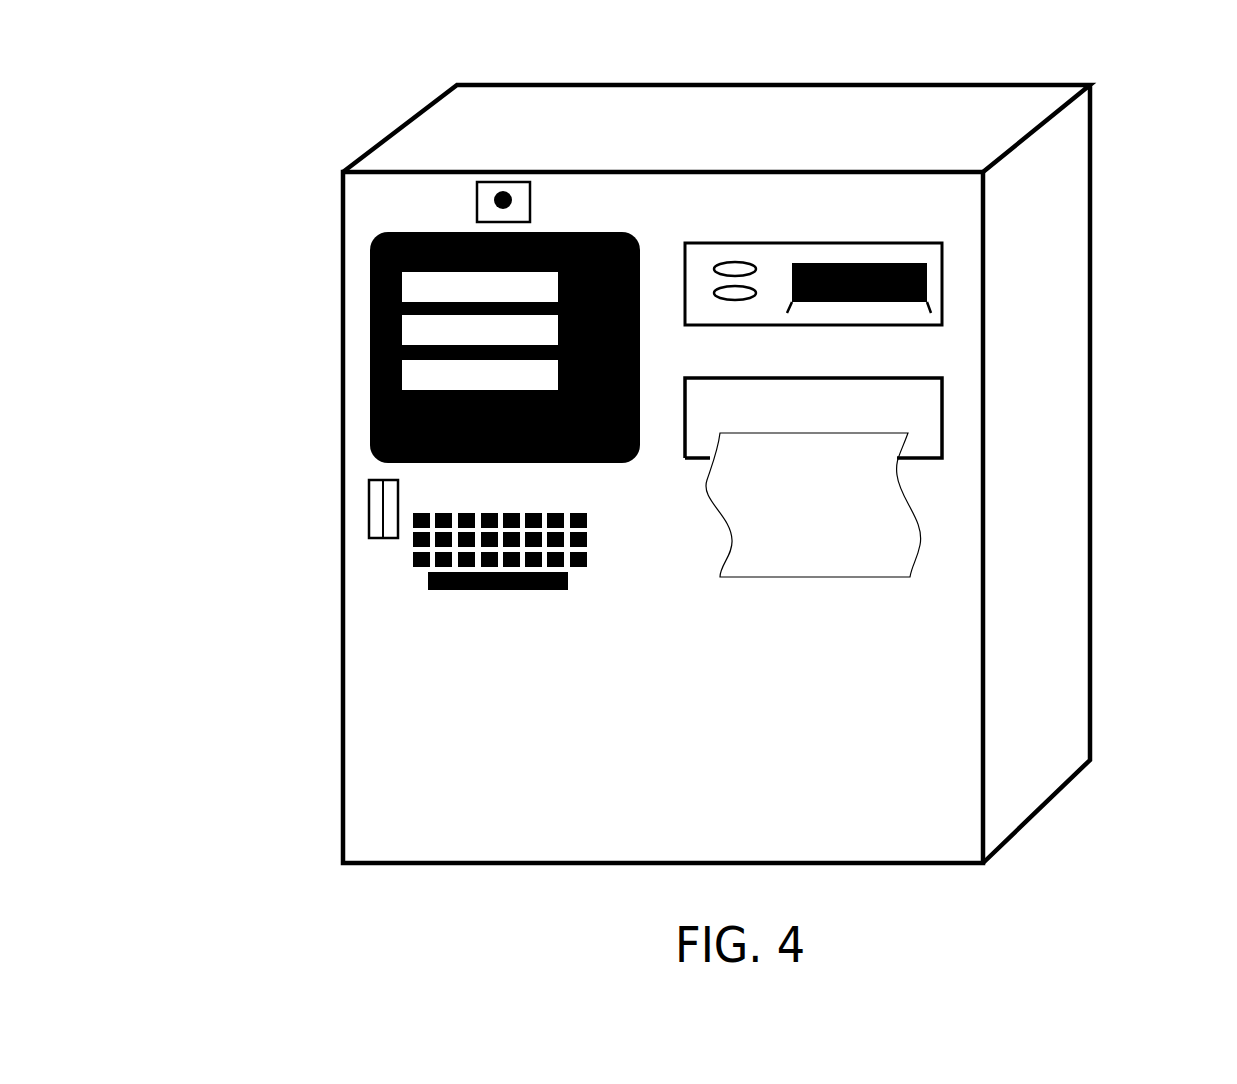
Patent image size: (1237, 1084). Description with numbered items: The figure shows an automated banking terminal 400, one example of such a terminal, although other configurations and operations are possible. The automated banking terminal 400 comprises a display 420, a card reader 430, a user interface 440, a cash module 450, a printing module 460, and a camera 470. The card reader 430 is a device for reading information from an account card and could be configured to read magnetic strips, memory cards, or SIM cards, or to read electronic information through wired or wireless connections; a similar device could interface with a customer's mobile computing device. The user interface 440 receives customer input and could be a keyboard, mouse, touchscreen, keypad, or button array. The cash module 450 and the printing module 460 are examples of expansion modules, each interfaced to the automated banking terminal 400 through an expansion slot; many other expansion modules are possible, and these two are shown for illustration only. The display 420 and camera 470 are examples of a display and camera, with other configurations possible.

The automated banking terminal 400 is at (1104, 110).
The display 420 is at (362, 417).
The card reader 430 is at (364, 488).
The user interface 440 is at (406, 558).
The cash module 450 is at (955, 280).
The printing module 460 is at (955, 405).
The camera 470 is at (465, 200).